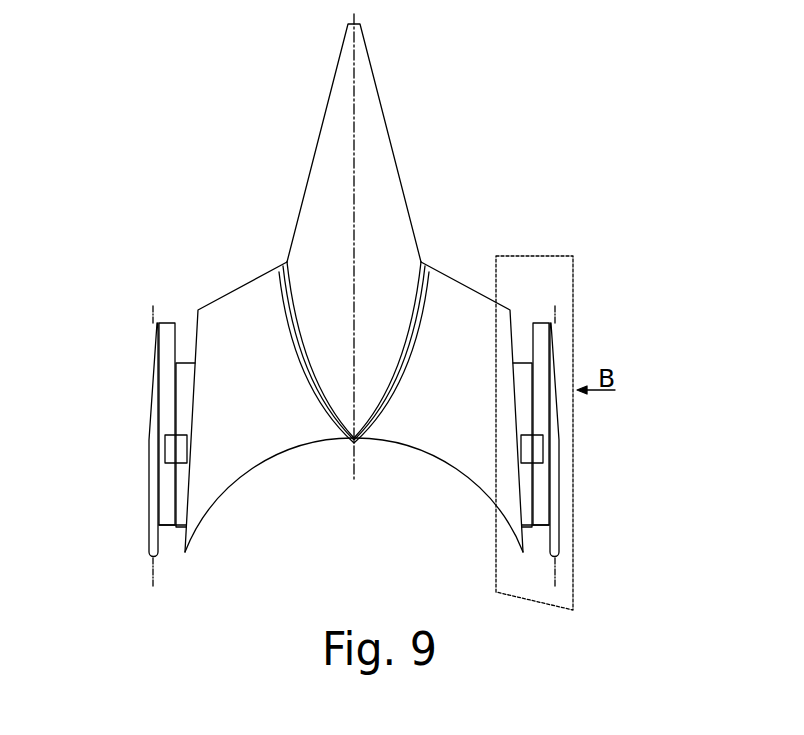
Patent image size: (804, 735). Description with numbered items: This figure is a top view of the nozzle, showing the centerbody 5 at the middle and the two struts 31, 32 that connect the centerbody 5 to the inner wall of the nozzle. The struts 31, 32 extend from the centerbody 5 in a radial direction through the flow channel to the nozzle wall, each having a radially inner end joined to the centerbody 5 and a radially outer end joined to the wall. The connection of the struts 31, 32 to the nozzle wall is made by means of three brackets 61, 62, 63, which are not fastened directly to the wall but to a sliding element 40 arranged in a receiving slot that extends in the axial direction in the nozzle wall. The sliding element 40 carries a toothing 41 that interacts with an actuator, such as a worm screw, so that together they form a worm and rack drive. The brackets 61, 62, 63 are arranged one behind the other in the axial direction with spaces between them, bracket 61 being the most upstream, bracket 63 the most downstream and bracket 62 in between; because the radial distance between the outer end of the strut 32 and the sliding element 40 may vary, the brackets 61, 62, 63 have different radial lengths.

The centerbody 5 is at (385, 180).
The strut 31 is at (287, 433).
The strut 32 is at (447, 440).
The sliding element 40 is at (167, 400).
The toothing 41 is at (150, 473).
The bracket 61 is at (185, 530).
The bracket 62 is at (180, 450).
The bracket 63 is at (177, 362).